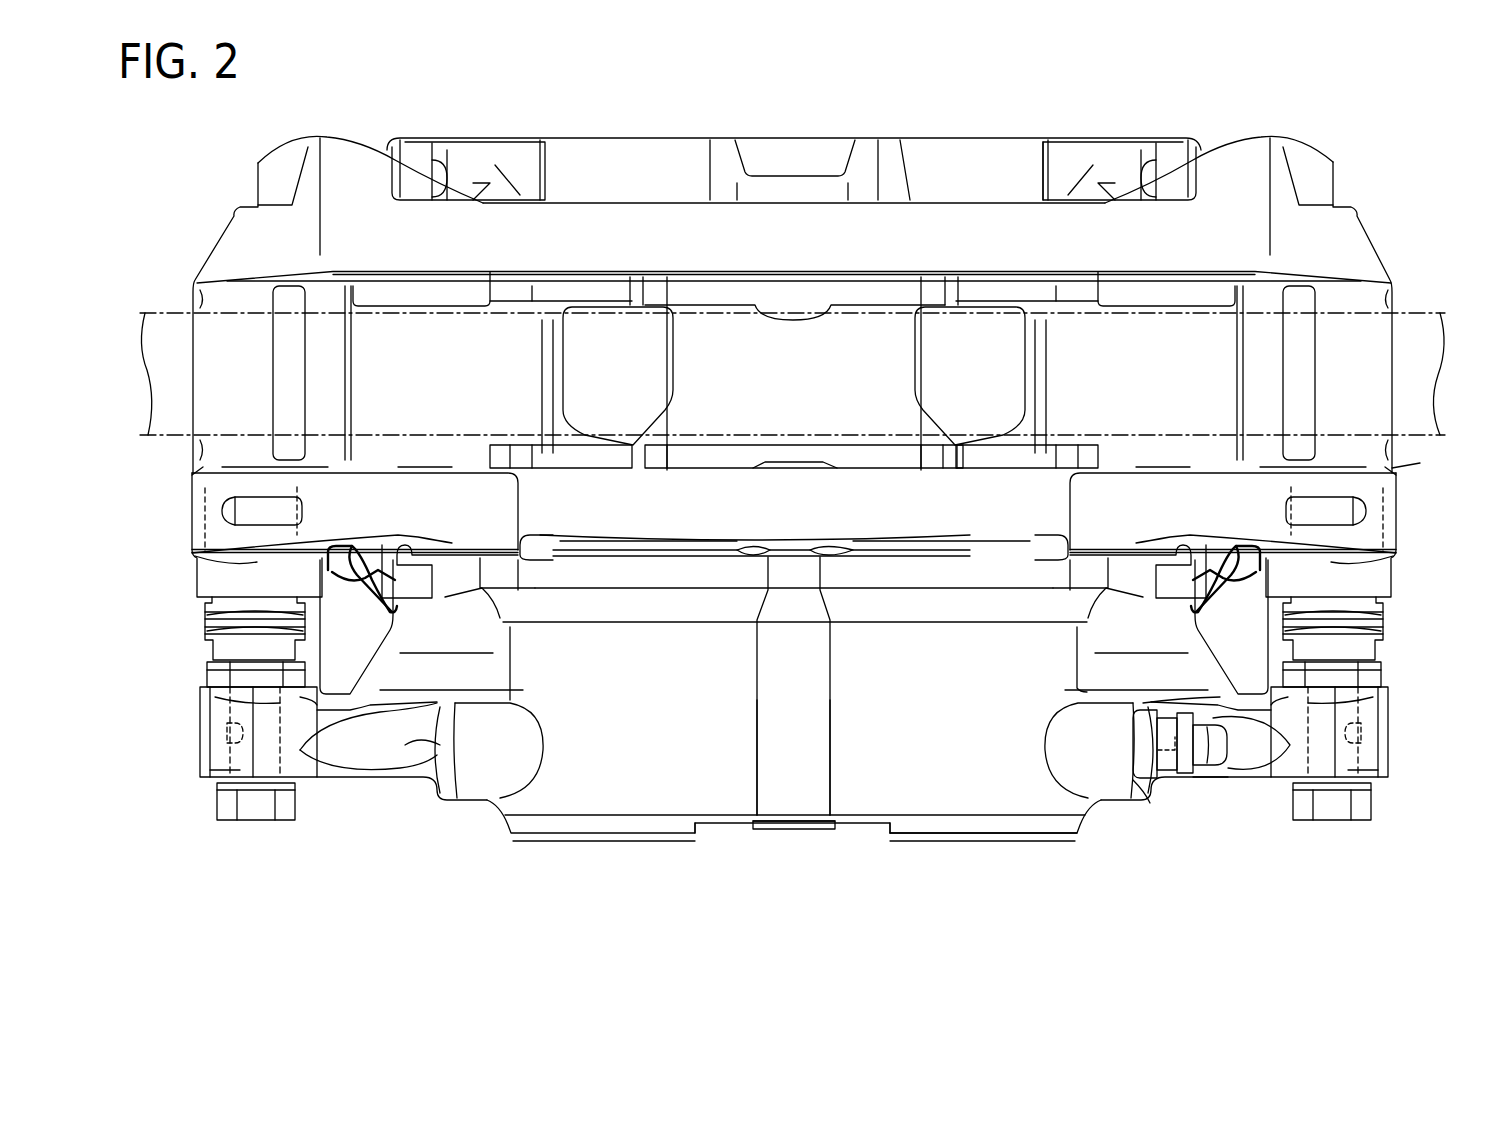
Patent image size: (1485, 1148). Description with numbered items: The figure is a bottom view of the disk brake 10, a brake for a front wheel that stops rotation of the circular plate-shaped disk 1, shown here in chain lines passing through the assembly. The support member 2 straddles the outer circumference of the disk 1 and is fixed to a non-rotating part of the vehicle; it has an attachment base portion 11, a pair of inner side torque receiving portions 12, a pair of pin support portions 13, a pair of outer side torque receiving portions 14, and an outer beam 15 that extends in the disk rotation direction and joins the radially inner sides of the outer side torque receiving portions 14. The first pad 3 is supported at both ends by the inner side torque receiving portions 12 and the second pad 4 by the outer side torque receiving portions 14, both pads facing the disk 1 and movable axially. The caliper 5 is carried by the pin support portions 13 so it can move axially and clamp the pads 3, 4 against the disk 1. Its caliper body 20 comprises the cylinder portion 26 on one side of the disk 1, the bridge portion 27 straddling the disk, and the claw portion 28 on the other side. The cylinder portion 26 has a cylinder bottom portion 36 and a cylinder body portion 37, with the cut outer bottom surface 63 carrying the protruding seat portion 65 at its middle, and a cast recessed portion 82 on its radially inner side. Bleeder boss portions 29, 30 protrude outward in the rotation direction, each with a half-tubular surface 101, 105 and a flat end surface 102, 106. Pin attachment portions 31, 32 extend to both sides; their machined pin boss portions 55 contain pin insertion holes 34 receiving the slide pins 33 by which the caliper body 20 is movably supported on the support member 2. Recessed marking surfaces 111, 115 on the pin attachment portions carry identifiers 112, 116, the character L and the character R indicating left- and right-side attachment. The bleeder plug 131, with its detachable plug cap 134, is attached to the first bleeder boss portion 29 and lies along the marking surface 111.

The disk 1 is at (1432, 462).
The support member 2 is at (1416, 538).
The first pad 3 is at (730, 428).
The second pad 4 is at (842, 322).
The caliper 5 is at (643, 856).
The disk brake 10 is at (1402, 822).
The attachment base portion 11 is at (797, 510).
The inner side torque receiving portions 12 is at (238, 533).
The pin support portions 13 is at (218, 355).
The outer side torque receiving portions 14 is at (243, 240).
The outer beam 15 is at (795, 233).
The caliper body 20 is at (188, 776).
The cylinder portion 26 is at (710, 795).
The bridge portion 27 is at (390, 340).
The claw portion 28 is at (960, 165).
The first bleeder boss portion 29 is at (1107, 763).
The second bleeder boss portion 30 is at (480, 777).
The first pin attachment portion 31 is at (1380, 780).
The second pin attachment portion 32 is at (218, 740).
The slide pins 33 is at (255, 805).
The pin insertion hole 34 is at (240, 728).
The cylinder bottom portion 36 is at (965, 840).
The cylinder body portion 37 is at (882, 715).
The pin boss portions 55 is at (218, 785).
The outer bottom surface 63 is at (870, 825).
The seat portion 65 is at (782, 830).
The recessed portion 82 is at (770, 740).
The half-tubular surface 101 is at (1073, 753).
The end surface 102 is at (1150, 778).
The half-tubular surface 105 is at (510, 757).
The end surface 106 is at (428, 785).
The marking surface 111 is at (1240, 755).
The identifier 112 is at (1160, 753).
The marking surface 115 is at (362, 748).
The identifier 116 is at (400, 752).
The bleeder plug 131 is at (1207, 781).
The plug cap 134 is at (1213, 745).